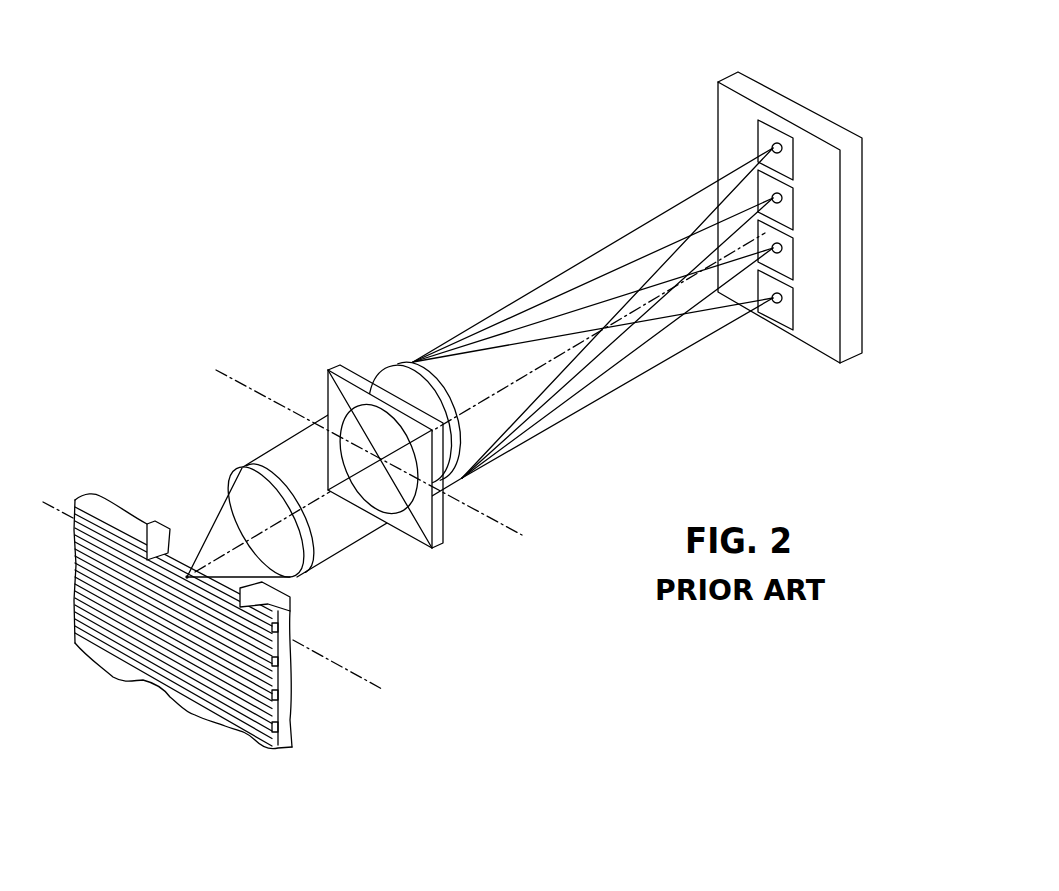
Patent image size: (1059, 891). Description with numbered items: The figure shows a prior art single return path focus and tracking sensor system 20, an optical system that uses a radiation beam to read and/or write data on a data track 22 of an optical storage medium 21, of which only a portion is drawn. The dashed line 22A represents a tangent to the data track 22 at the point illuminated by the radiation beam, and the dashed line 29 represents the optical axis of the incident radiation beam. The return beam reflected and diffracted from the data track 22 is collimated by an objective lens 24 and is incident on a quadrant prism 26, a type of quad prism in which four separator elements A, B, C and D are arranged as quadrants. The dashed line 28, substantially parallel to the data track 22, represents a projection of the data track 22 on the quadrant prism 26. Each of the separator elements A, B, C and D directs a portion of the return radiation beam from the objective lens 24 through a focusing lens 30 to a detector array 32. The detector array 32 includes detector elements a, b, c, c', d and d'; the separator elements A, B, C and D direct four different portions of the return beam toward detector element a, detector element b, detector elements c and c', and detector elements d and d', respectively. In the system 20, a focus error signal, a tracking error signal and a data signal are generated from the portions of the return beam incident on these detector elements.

The single return path focus and tracking sensor system 20 is at (233, 167).
The optical storage medium 21 is at (210, 589).
The data track 22 is at (293, 634).
The tangent to data track 22A is at (358, 673).
The objective lens 24 is at (261, 468).
The quadrant prism 26 is at (396, 469).
The projection of the data track on the quadrant prism 28 is at (212, 367).
The optical axis of the incident radiation beam 29 is at (205, 562).
The focusing lens 30 is at (397, 365).
The detector array 32 is at (783, 193).
The separator element A is at (367, 423).
The separator element B is at (382, 488).
The separator element C is at (360, 463).
The separator element D is at (404, 460).
The detector element a is at (797, 158).
The detector element b is at (797, 300).
The detector element c is at (734, 150).
The detector element d is at (724, 191).
The detector element c' is at (823, 187).
The detector element d' is at (828, 236).